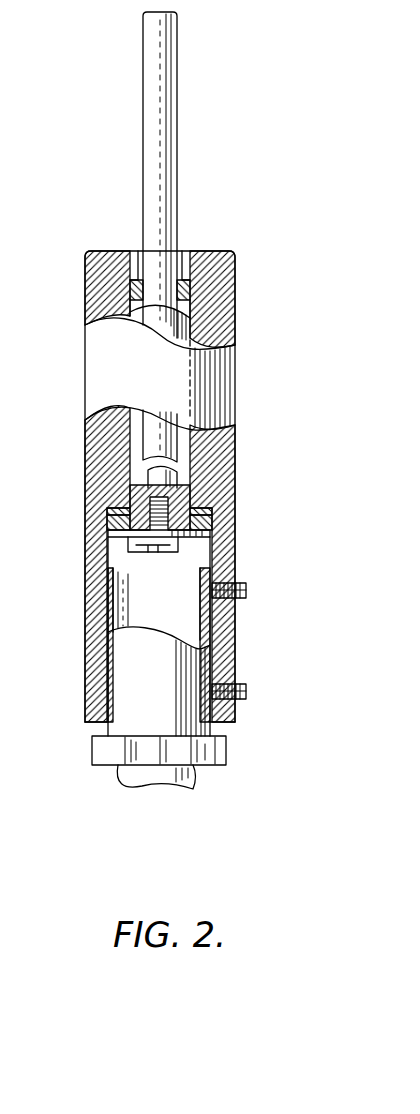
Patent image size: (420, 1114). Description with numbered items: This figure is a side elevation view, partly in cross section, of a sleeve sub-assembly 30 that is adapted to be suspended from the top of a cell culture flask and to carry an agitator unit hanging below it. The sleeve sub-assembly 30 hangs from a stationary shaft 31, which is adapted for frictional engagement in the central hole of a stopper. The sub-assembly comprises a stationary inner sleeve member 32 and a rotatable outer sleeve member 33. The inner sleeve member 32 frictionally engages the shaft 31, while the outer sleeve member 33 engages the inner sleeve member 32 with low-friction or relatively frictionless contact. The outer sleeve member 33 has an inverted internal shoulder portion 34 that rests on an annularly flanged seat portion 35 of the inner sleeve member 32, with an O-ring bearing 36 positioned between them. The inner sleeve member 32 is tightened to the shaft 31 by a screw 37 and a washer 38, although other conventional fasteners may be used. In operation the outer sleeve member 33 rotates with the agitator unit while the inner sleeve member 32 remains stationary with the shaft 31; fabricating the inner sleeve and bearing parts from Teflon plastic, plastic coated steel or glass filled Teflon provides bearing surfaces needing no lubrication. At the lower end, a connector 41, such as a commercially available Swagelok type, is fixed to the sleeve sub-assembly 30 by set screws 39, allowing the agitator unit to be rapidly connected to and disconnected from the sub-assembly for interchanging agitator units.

The sleeve sub-assembly 30 is at (252, 349).
The stationary shaft 31 is at (143, 103).
The inner sleeve member 32 is at (145, 440).
The outer sleeve member 33 is at (235, 388).
The inverted internal shoulder portion 34 is at (200, 531).
The annularly flanged seat portion 35 is at (110, 522).
The O-ring bearing 36 is at (125, 508).
The screw 37 is at (147, 552).
The washer 38 is at (110, 540).
The set screws 39 is at (240, 684).
The connector 41 is at (238, 742).